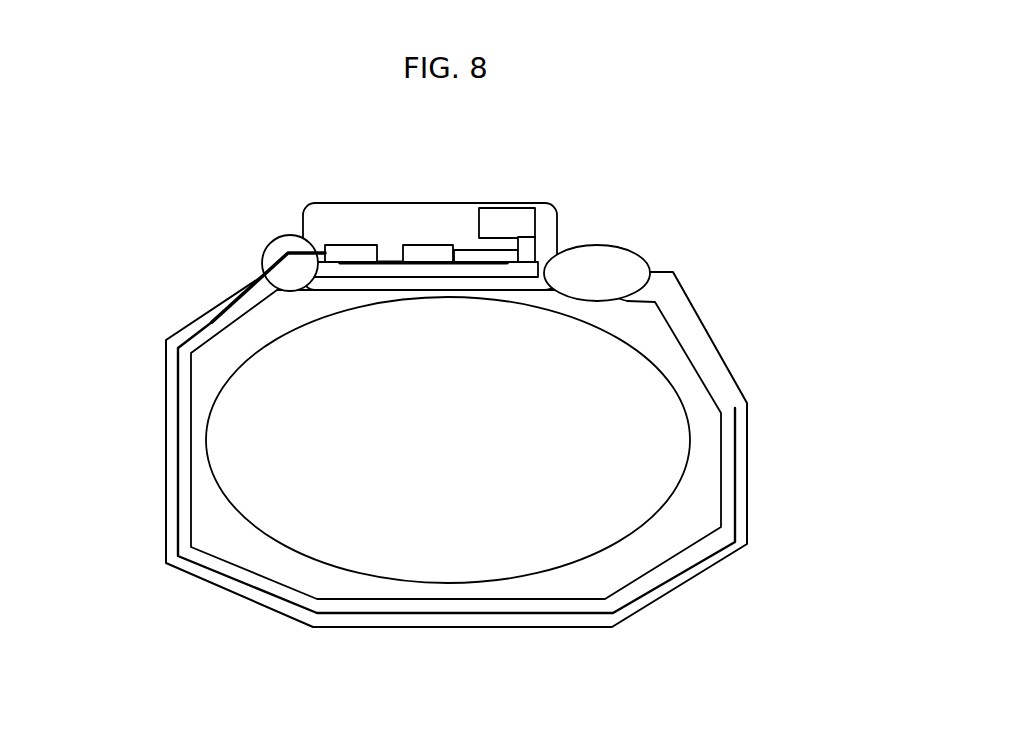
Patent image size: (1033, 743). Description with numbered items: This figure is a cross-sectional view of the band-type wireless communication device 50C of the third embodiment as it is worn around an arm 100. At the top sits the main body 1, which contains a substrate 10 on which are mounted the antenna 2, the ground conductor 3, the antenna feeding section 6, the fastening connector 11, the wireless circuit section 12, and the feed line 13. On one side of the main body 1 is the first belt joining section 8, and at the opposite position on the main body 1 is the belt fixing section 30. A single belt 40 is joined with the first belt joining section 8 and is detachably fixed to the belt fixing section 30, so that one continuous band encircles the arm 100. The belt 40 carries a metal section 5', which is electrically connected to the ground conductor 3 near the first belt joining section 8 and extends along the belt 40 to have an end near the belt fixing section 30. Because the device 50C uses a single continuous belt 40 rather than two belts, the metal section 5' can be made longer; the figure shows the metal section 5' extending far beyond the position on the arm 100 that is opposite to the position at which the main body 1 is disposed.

The main body 1 is at (315, 202).
The antenna 2 is at (510, 213).
The ground conductor 3 is at (387, 263).
The metal section 5' is at (420, 467).
The antenna feeding section 6 is at (525, 245).
The first belt joining section 8 is at (283, 245).
The substrate 10 is at (485, 273).
The fastening connector 11 is at (352, 250).
The wireless circuit section 12 is at (428, 250).
The feed line 13 is at (467, 252).
The belt fixing section 30 is at (598, 255).
The belt 40 is at (698, 315).
The band-type wireless communication device 50C is at (698, 180).
The arm 100 is at (658, 388).